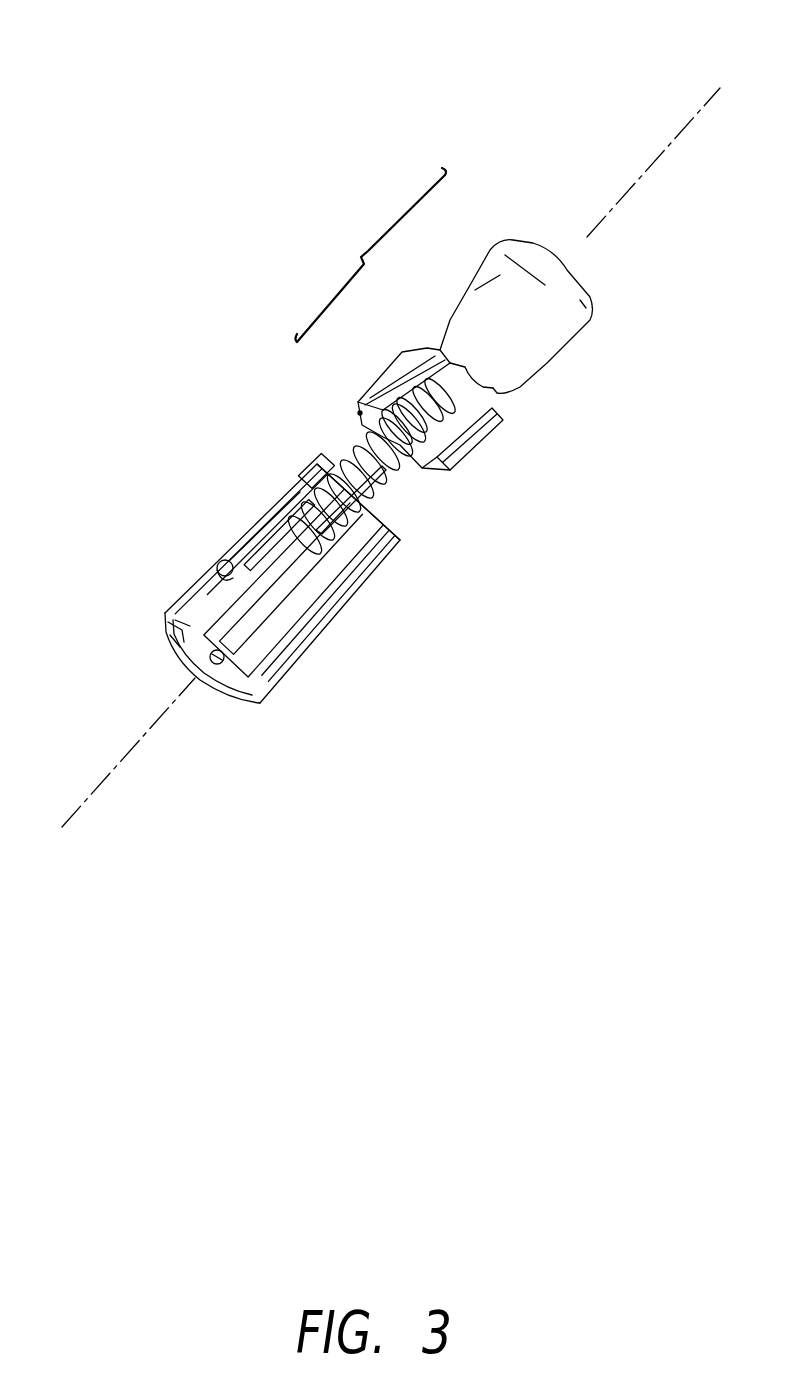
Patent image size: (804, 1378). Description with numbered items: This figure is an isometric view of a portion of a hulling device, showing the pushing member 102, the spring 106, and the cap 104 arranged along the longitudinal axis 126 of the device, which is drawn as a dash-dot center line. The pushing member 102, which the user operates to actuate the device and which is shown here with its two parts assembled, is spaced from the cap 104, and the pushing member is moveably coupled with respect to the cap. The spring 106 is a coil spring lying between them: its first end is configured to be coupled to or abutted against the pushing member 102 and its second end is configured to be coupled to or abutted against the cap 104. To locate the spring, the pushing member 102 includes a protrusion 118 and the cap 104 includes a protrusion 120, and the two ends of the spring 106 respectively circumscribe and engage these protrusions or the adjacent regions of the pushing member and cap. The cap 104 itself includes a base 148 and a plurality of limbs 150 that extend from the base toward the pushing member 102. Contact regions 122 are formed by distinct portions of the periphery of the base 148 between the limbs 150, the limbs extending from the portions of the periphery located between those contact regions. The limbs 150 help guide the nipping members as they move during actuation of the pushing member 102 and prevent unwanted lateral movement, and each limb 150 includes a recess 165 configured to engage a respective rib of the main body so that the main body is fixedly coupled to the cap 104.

The pushing member 102 is at (371, 255).
The cap 104 is at (285, 690).
The spring 106 is at (366, 414).
The protrusion 118 is at (420, 428).
The protrusion 120 is at (333, 520).
The contact regions 122 is at (237, 672).
The longitudinal axis 126 is at (687, 120).
The base 148 is at (192, 627).
The limbs 150 is at (205, 597).
The recess 165 is at (310, 493).